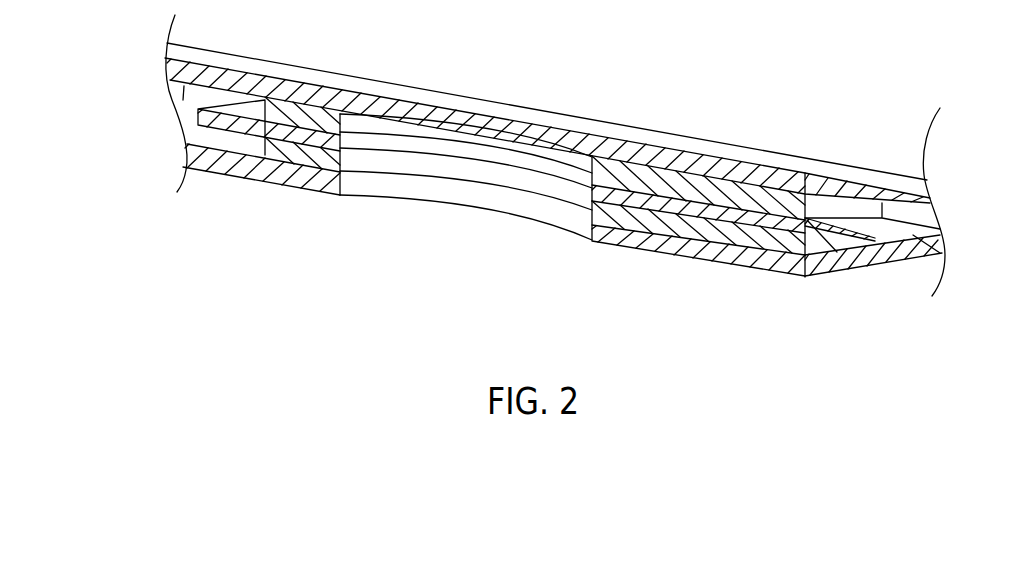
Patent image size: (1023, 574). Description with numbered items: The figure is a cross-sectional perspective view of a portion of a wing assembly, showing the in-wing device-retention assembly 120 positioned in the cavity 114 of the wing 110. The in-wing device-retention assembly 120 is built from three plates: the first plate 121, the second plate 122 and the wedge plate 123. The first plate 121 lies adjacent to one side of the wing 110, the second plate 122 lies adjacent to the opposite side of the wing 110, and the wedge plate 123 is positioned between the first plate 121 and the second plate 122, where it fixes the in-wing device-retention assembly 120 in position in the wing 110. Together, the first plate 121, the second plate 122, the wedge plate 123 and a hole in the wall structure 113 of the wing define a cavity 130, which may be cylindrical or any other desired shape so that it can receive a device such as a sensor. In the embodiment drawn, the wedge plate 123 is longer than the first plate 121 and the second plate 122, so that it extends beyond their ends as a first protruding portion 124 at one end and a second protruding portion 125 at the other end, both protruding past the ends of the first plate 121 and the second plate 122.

The wing 110 is at (721, 150).
The wall structure 113 is at (690, 249).
The cavity 114 is at (183, 99).
The in-wing device-retention assembly 120 is at (598, 105).
The first plate 121 is at (808, 256).
The second plate 122 is at (738, 238).
The wedge plate 123 is at (775, 243).
The first protruding portion 124 is at (943, 254).
The second protruding portion 125 is at (247, 108).
The cavity 130 is at (452, 204).